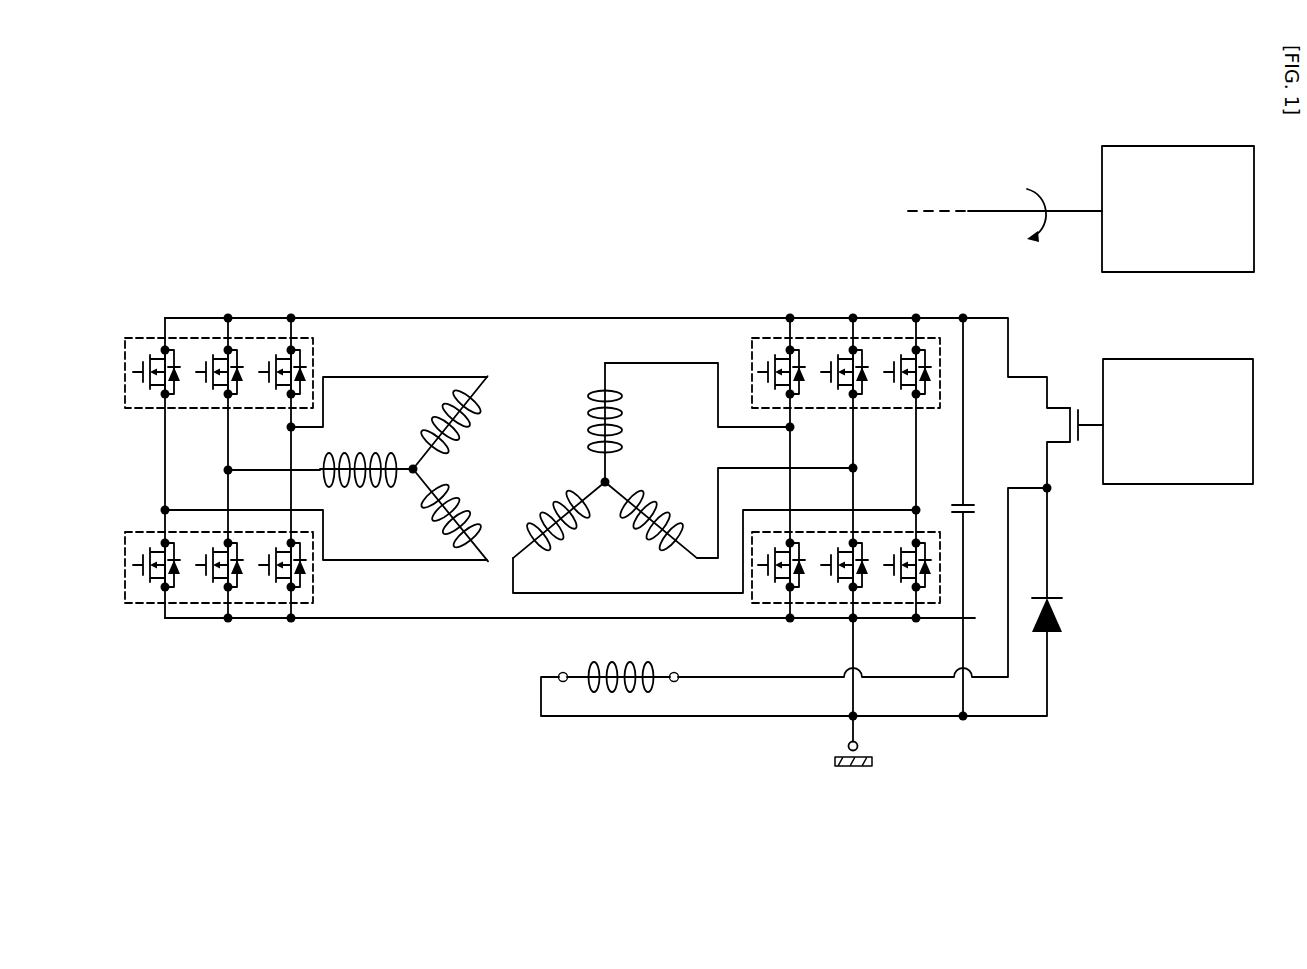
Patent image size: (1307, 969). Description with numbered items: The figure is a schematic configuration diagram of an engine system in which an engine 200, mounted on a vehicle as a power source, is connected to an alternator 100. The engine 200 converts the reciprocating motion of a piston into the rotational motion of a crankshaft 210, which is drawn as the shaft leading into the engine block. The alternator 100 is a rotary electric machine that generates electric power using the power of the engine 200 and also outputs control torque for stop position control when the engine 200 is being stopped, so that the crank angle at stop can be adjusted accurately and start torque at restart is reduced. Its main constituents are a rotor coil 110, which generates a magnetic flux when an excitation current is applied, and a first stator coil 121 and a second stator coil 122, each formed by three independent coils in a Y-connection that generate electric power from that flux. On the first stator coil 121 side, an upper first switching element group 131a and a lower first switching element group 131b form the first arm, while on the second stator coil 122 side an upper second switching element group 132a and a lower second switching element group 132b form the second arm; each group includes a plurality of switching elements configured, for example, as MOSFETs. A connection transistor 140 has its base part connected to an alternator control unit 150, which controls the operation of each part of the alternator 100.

The alternator 100 is at (298, 228).
The rotor coil 110 is at (587, 665).
The first stator coil 121 is at (405, 422).
The second stator coil 122 is at (656, 445).
The upper first switching element group 131a is at (152, 338).
The lower first switching element group 131b is at (150, 532).
The upper second switching element group 132a is at (880, 338).
The lower second switching element group 132b is at (877, 532).
The connection transistor 140 is at (1073, 402).
The alternator control unit 150 is at (1181, 359).
The engine 200 is at (1180, 146).
The crankshaft 210 is at (1000, 211).